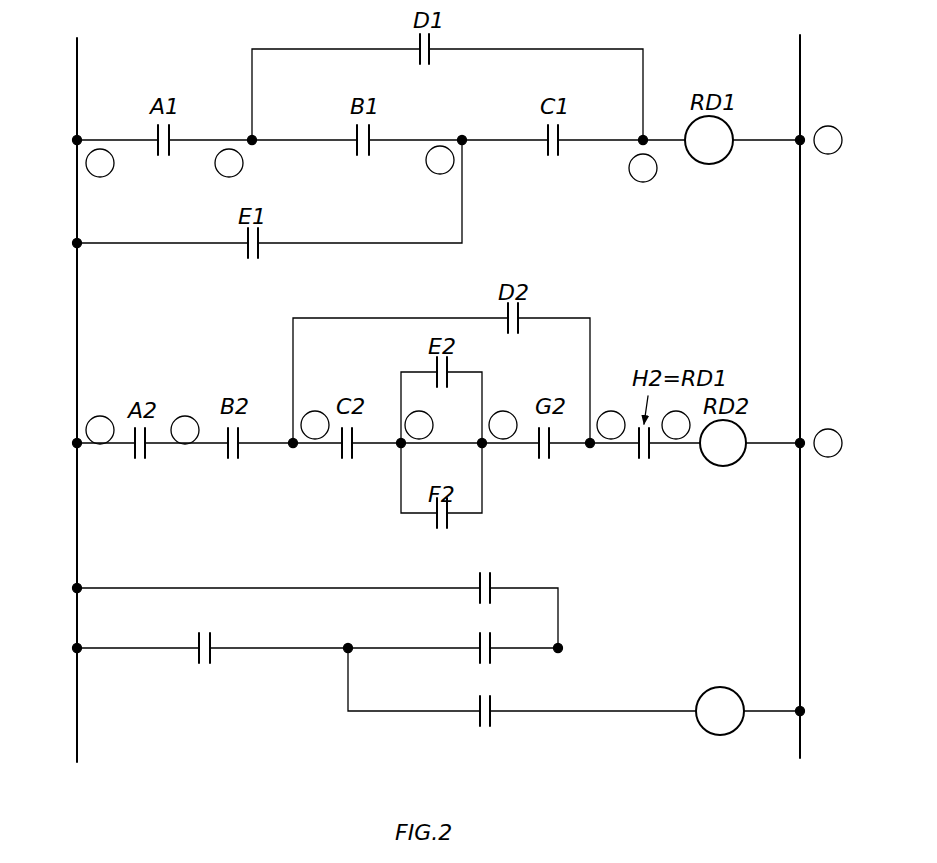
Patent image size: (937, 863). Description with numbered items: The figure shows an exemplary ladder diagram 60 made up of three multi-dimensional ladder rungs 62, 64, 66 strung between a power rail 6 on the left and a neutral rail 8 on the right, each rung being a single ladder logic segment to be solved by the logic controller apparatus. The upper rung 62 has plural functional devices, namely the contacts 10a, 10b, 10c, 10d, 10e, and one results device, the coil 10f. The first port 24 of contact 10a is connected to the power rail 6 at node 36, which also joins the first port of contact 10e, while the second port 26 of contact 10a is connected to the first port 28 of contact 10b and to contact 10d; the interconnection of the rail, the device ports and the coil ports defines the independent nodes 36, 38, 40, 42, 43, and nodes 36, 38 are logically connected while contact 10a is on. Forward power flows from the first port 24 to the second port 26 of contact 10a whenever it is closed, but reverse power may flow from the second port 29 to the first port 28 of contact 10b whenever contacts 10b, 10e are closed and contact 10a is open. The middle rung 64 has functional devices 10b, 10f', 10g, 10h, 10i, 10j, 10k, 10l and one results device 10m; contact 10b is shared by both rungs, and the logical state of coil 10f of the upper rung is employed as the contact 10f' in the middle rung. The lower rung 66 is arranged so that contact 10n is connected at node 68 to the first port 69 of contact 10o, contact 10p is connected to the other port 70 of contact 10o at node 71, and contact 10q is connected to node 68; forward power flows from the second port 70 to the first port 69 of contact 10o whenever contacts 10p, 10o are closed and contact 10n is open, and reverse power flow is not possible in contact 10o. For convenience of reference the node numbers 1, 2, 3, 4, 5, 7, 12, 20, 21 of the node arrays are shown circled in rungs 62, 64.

The power rail 6 is at (77, 63).
The neutral rail 8 is at (800, 56).
The node 36 is at (70, 141).
The first port 24 is at (118, 140).
The second port 26 is at (218, 140).
The first port 28 is at (313, 140).
The second port 29 is at (424, 140).
The node 38 is at (254, 146).
The node 40 is at (466, 146).
The node 42 is at (641, 136).
The node 43 is at (798, 136).
The upper rung 62 is at (772, 162).
The middle rung 64 is at (772, 480).
The lower rung 66 is at (772, 645).
The node 68 is at (345, 646).
The first port 69 is at (396, 648).
The second port 70 is at (536, 656).
The node 71 is at (562, 648).
The ladder diagram 60 is at (612, 770).
The contact 10a is at (152, 152).
The contact 10b is at (352, 152).
The contact 10c is at (542, 152).
The contact 10d is at (432, 60).
The contact 10e is at (244, 253).
The coil 10f is at (705, 164).
The contact 10f' is at (623, 465).
The functional device 10g is at (223, 453).
The functional device 10h is at (519, 332).
The functional device 10i is at (338, 453).
The functional device 10j is at (449, 382).
The functional device 10k is at (434, 522).
The functional device 10l is at (535, 453).
The results device 10m is at (714, 465).
The contact 10n is at (194, 660).
The contact 10o is at (494, 644).
The contact 10p is at (492, 582).
The contact 10q is at (476, 726).
The node number 1 is at (100, 296).
The node number 2 is at (420, 294).
The node number 3 is at (440, 160).
The node number 4 is at (659, 296).
The node number 5 is at (315, 425).
The node number 7 is at (185, 430).
The node number 12 is at (828, 291).
The node number 20 is at (419, 425).
The node number 21 is at (503, 425).